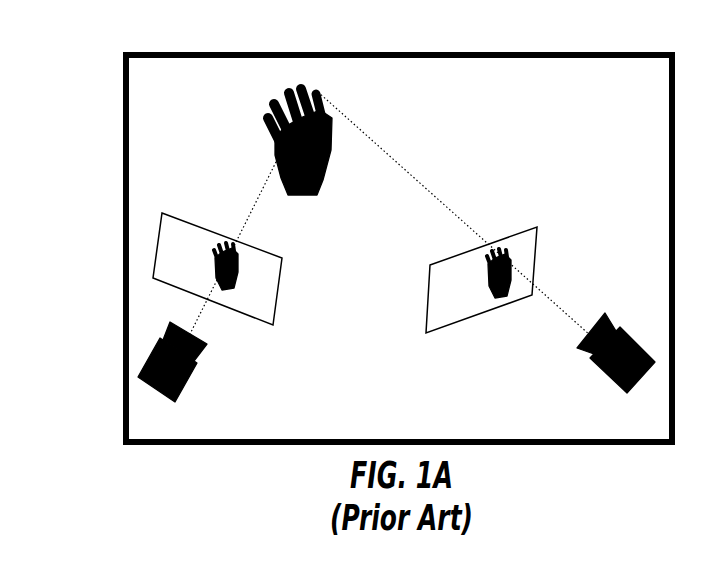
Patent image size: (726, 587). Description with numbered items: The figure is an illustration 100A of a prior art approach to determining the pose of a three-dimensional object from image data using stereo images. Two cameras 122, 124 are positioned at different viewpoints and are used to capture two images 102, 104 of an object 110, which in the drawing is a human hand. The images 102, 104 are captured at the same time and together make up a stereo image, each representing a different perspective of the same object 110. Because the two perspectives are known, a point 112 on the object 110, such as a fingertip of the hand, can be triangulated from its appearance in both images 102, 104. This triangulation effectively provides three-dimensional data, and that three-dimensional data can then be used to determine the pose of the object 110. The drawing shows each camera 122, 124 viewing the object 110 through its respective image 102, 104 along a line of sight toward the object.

The illustration 100A is at (124, 61).
The image 102 is at (202, 228).
The image 104 is at (537, 228).
The object 110 is at (316, 194).
The point 112 is at (312, 92).
The camera 122 is at (190, 382).
The camera 124 is at (619, 384).